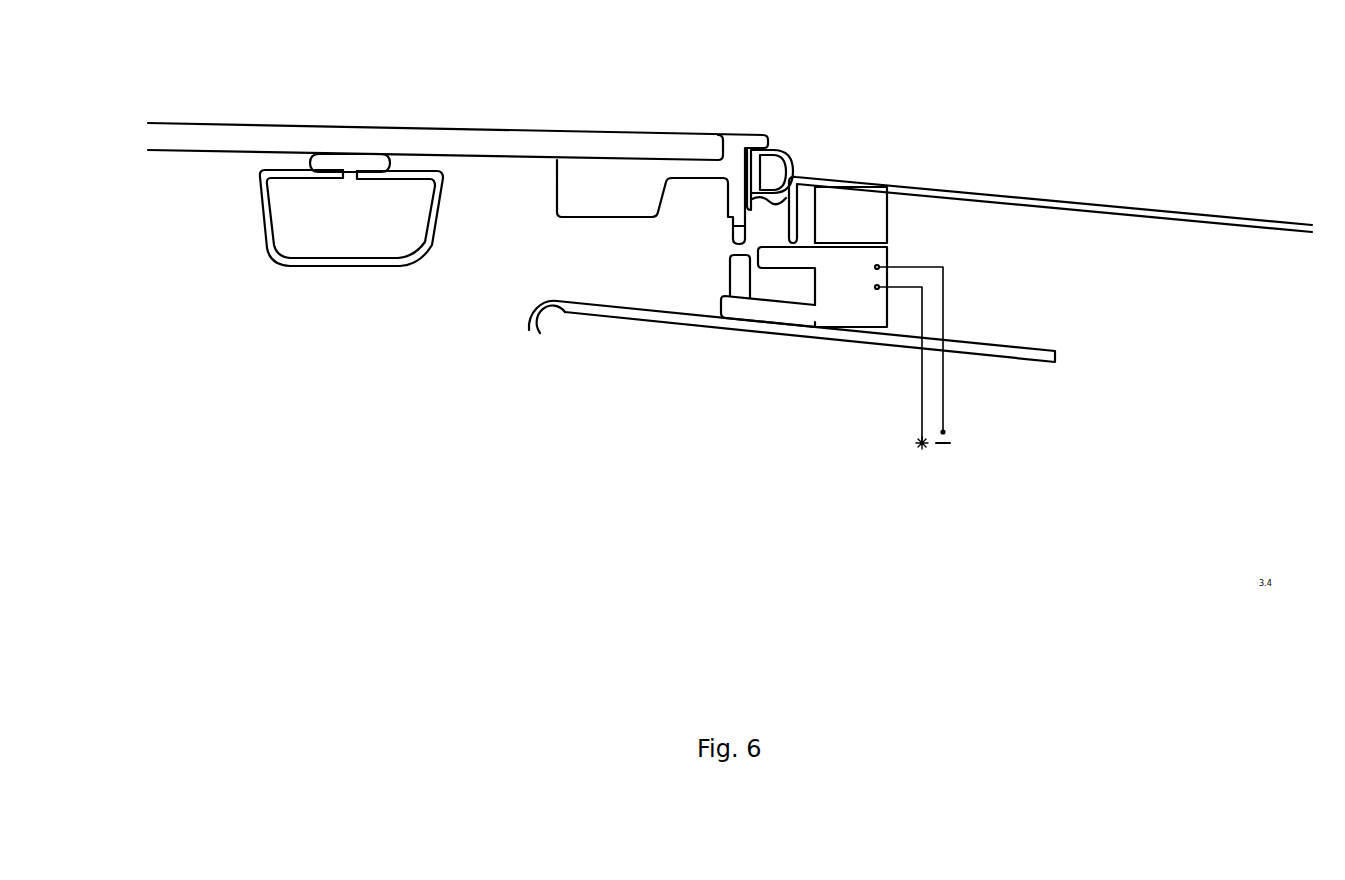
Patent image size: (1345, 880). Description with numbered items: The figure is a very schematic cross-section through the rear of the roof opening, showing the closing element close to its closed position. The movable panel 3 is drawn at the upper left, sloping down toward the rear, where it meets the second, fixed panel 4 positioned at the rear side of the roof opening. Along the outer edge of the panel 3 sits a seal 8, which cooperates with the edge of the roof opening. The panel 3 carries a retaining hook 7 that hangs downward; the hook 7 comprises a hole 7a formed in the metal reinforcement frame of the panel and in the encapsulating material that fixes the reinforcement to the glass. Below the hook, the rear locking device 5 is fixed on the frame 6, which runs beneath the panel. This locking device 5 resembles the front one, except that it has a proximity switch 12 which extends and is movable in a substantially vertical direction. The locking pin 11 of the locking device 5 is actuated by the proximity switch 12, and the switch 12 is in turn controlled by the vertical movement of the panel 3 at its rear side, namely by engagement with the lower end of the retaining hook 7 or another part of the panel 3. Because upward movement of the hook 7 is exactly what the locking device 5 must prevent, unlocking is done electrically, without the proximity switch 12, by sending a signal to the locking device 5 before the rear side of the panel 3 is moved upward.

The panel 3 is at (400, 140).
The second panel 4 is at (1088, 200).
The locking device 5 is at (856, 362).
The frame 6 is at (570, 322).
The retaining hook 7 is at (737, 192).
The hole 7a is at (743, 227).
The seal 8 is at (783, 150).
The locking pin 11 is at (788, 257).
The proximity switch 12 is at (740, 277).